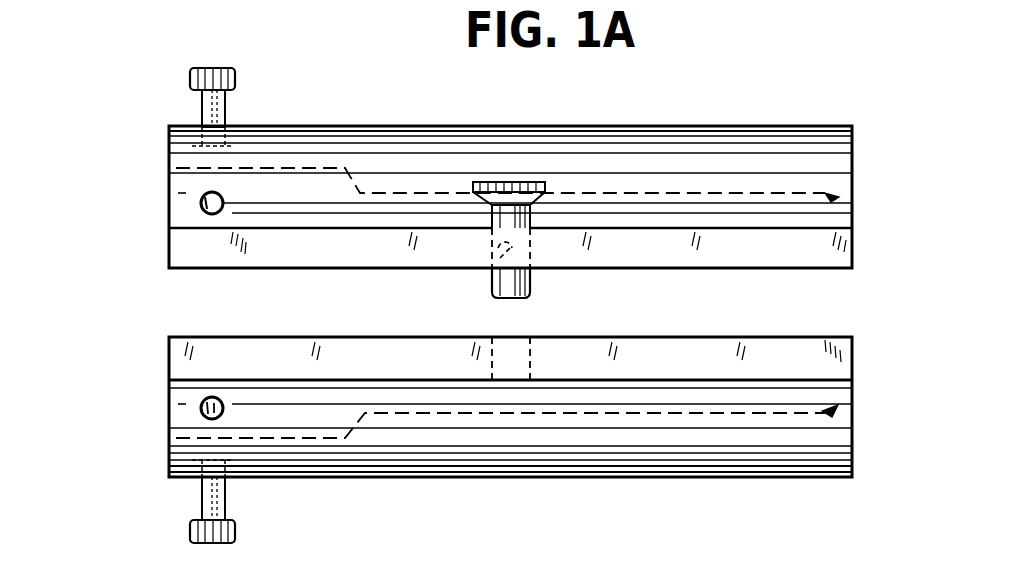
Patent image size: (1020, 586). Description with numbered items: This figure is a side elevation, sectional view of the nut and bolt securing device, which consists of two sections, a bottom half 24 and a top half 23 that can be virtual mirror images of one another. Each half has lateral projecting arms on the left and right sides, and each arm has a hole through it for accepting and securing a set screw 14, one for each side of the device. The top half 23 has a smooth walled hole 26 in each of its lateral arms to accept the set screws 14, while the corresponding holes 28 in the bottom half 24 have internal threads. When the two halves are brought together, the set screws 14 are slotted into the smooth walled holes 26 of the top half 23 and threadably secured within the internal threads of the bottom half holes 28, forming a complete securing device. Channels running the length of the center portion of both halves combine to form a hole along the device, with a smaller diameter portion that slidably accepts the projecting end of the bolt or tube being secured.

The set screw 14 is at (531, 279).
The top half 23 is at (171, 250).
The bottom half 24 is at (168, 360).
The smooth walled hole 26 is at (491, 270).
The internally threaded hole 28 is at (506, 335).